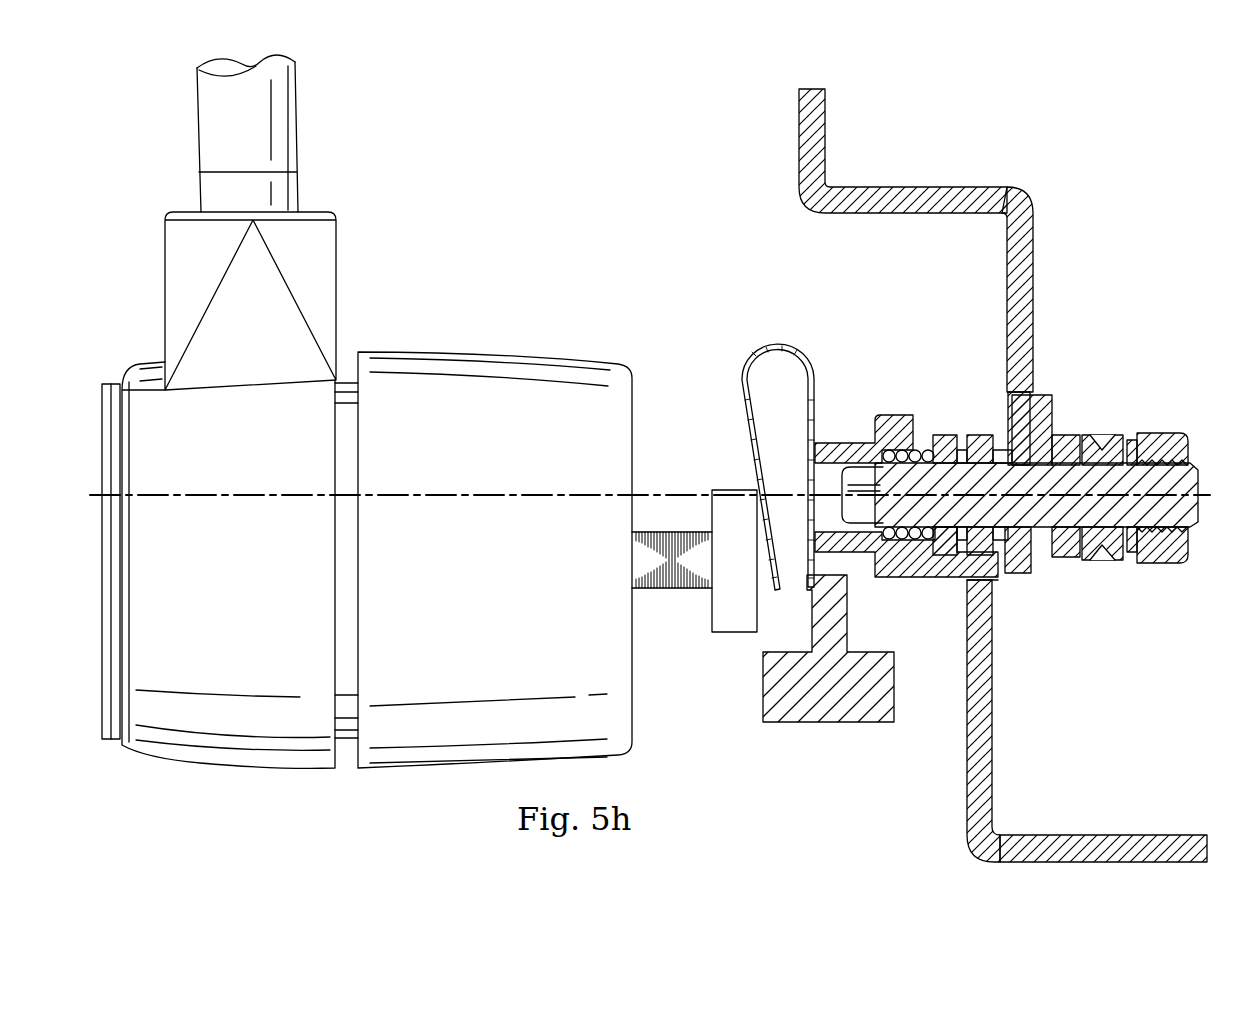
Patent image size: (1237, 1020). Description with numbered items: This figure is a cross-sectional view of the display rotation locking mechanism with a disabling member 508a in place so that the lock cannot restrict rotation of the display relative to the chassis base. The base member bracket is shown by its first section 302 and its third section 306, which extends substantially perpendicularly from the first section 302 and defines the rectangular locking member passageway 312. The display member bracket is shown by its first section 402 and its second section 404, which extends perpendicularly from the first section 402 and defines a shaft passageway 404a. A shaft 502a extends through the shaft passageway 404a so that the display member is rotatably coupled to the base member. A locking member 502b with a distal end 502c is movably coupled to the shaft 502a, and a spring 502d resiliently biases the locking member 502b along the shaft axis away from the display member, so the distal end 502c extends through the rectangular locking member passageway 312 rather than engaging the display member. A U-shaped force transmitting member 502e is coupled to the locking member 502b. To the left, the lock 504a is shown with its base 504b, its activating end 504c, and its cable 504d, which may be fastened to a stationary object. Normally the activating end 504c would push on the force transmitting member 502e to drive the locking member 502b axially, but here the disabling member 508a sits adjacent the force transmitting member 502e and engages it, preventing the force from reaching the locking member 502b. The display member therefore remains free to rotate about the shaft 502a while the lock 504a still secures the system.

The first section 302 is at (1112, 835).
The third section 306 is at (966, 766).
The rectangular locking member passageway 312 is at (968, 583).
The first section 402 is at (915, 187).
The second section 404 is at (1036, 288).
The shaft passageway 404a is at (1012, 438).
The shaft 502a is at (1196, 538).
The locking member 502b is at (912, 578).
The distal end 502c is at (1006, 574).
The spring 502d is at (908, 447).
The force transmitting member 502e is at (745, 362).
The lock 504a is at (218, 787).
The base 504b is at (488, 355).
The activating end 504c is at (741, 632).
The cable 504d is at (197, 122).
The disabling member 508a is at (810, 722).